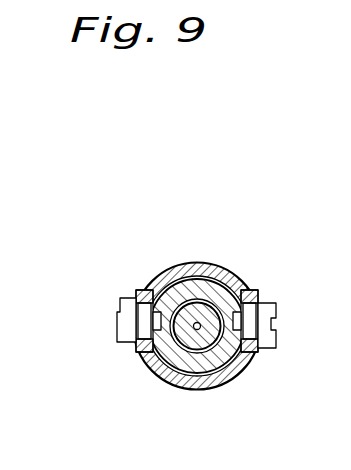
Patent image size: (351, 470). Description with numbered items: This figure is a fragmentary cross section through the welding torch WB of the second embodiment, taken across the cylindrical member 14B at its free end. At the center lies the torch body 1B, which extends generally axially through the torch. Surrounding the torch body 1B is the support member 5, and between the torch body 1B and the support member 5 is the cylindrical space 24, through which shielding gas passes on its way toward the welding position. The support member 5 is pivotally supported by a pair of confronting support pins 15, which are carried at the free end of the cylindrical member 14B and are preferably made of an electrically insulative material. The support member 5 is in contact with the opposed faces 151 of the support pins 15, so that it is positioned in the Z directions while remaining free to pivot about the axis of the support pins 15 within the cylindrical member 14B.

The welding torch WB is at (286, 174).
The cylindrical space 24 is at (190, 298).
The cylindrical member 14B is at (206, 277).
The opposed faces of the support pins 151 is at (164, 280).
The support pins 15 is at (120, 308).
The torch body 1B is at (167, 378).
The support member 5 is at (210, 360).